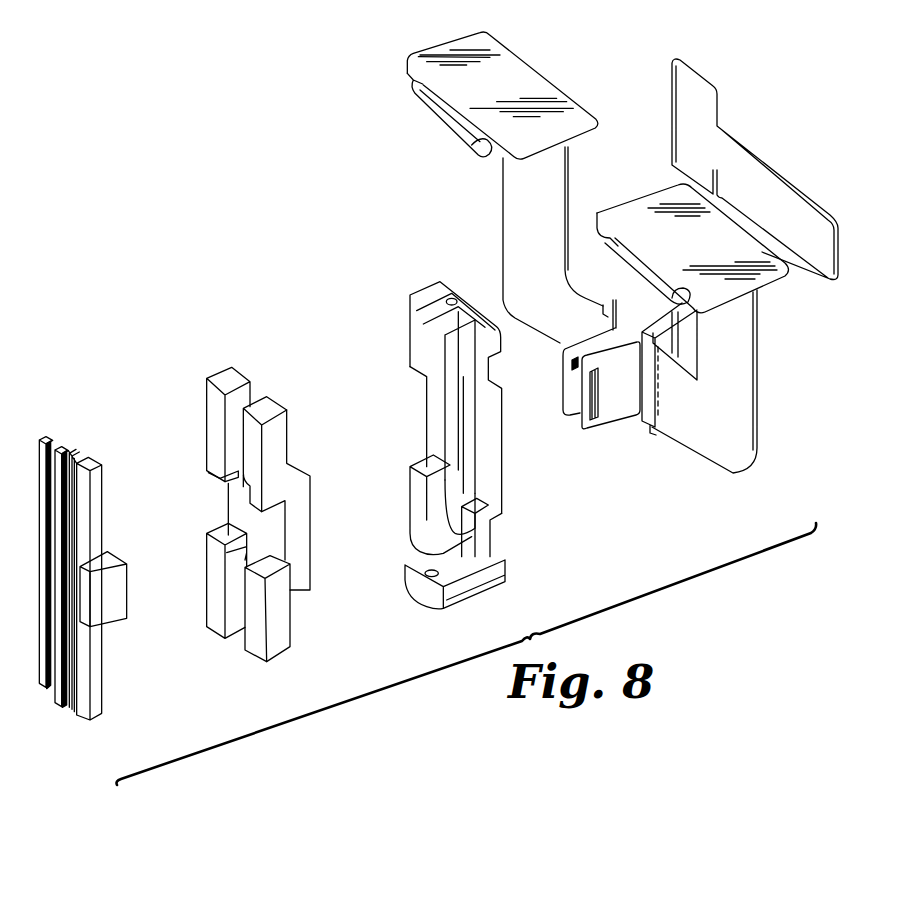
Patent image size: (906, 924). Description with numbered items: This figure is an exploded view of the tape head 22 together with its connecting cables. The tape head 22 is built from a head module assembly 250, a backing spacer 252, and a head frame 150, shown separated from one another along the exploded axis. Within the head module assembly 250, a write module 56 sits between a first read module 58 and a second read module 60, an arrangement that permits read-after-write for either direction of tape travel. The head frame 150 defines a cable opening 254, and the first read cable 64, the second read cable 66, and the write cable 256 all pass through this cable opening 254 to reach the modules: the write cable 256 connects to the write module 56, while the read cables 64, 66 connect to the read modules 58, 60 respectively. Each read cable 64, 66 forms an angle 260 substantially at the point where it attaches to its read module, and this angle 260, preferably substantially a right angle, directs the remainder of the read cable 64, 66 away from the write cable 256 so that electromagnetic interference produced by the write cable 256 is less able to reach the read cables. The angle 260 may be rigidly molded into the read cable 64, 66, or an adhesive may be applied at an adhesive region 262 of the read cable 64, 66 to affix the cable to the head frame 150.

The tape head 22 is at (192, 178).
The first read module 58 is at (45, 438).
The write module 56 is at (70, 452).
The second read module 60 is at (82, 460).
The head module assembly 250 is at (115, 551).
The backing spacer 252 is at (285, 649).
The cable opening 254 is at (459, 445).
The head frame 150 is at (505, 516).
The first read cable 64 is at (528, 182).
The adhesive region 262 is at (578, 344).
The angle 260 is at (645, 334).
The second read cable 66 is at (703, 452).
The write cable 256 is at (742, 139).